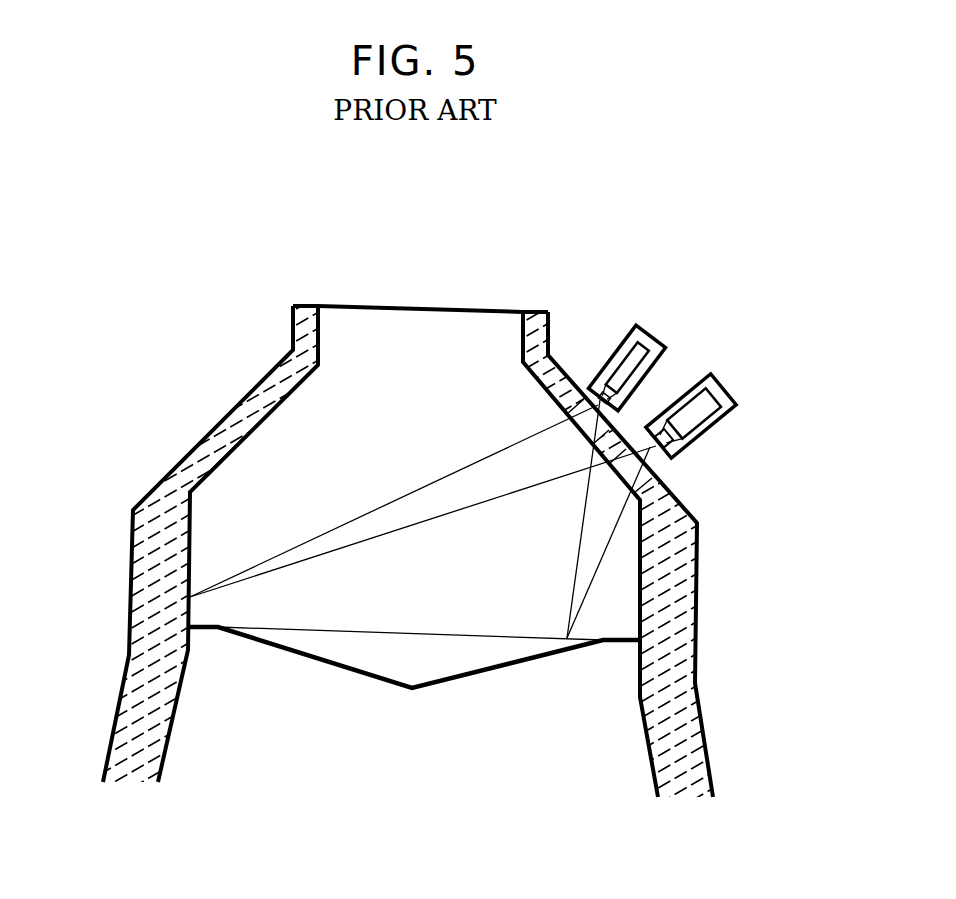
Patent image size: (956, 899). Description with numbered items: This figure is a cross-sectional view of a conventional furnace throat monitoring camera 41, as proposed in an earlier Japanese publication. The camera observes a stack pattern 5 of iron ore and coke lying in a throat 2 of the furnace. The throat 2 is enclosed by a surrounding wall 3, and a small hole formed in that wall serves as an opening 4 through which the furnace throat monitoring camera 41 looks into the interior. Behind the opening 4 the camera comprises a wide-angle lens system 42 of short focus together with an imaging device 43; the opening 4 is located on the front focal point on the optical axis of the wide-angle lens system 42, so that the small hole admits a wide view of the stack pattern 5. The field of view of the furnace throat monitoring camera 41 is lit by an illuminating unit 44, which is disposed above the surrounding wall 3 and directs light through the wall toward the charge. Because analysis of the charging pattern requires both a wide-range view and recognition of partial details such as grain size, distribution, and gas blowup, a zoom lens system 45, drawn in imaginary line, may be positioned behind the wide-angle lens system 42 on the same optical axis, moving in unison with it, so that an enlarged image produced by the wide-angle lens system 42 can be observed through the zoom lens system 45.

The throat 2 is at (453, 335).
The surrounding wall 3 is at (697, 622).
The opening 4 is at (612, 487).
The stack pattern 5 is at (308, 656).
The furnace throat monitoring camera 41 is at (716, 398).
The wide-angle lens system 42 is at (681, 458).
The imaging device 43 is at (714, 421).
The illuminating unit 44 is at (644, 332).
The zoom lens system 45 is at (683, 408).